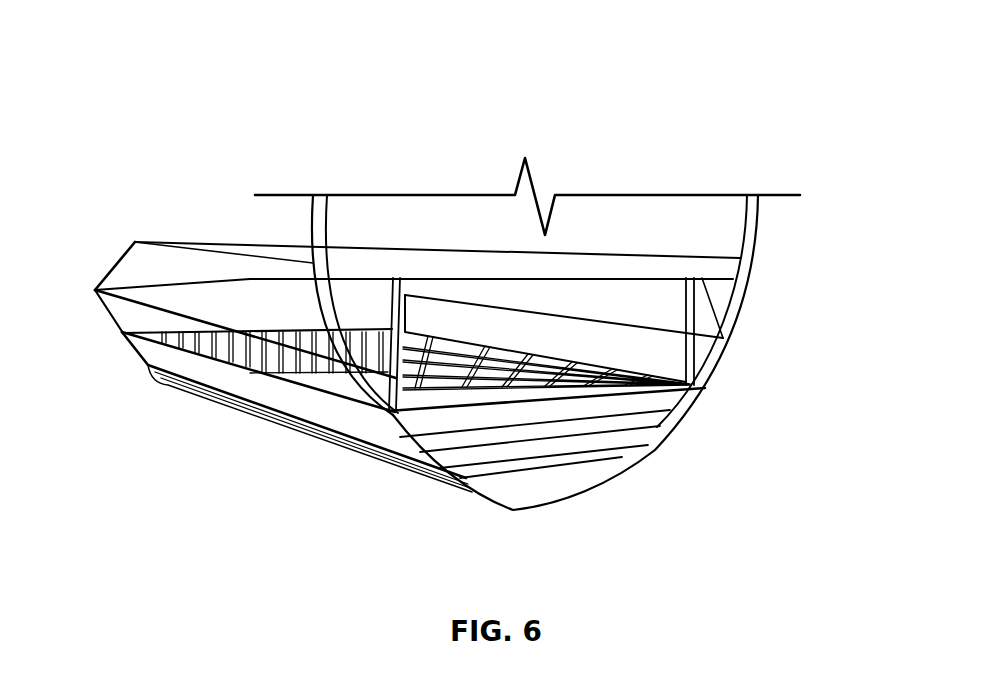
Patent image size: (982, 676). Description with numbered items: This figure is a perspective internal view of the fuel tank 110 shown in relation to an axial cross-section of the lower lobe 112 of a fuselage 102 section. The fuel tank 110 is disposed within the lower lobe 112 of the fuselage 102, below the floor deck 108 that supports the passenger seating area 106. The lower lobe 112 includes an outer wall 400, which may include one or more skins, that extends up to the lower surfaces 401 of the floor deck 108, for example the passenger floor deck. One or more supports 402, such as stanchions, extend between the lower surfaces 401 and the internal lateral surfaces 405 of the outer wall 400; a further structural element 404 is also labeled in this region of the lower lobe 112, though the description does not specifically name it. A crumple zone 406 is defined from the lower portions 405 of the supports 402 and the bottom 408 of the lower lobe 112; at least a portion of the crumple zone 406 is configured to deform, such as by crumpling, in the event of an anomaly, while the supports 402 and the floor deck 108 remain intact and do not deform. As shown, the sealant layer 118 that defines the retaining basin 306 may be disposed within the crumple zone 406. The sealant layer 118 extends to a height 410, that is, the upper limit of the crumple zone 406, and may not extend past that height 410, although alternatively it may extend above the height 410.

The fuselage 102 is at (772, 222).
The passenger seating area 106 is at (502, 182).
The floor deck 108 is at (597, 250).
The fuel tank 110 is at (147, 222).
The lower lobe 112 is at (252, 313).
The sealant layer 118 is at (660, 427).
The retaining basin 306 is at (575, 443).
The outer wall 400 is at (733, 322).
The lower surfaces 401 is at (445, 284).
The supports 402 is at (720, 356).
The support member 404 is at (705, 388).
The internal lateral surfaces 405 is at (683, 385).
The crumple zone 406 is at (657, 458).
The bottom 408 is at (579, 512).
The height 410 is at (325, 417).